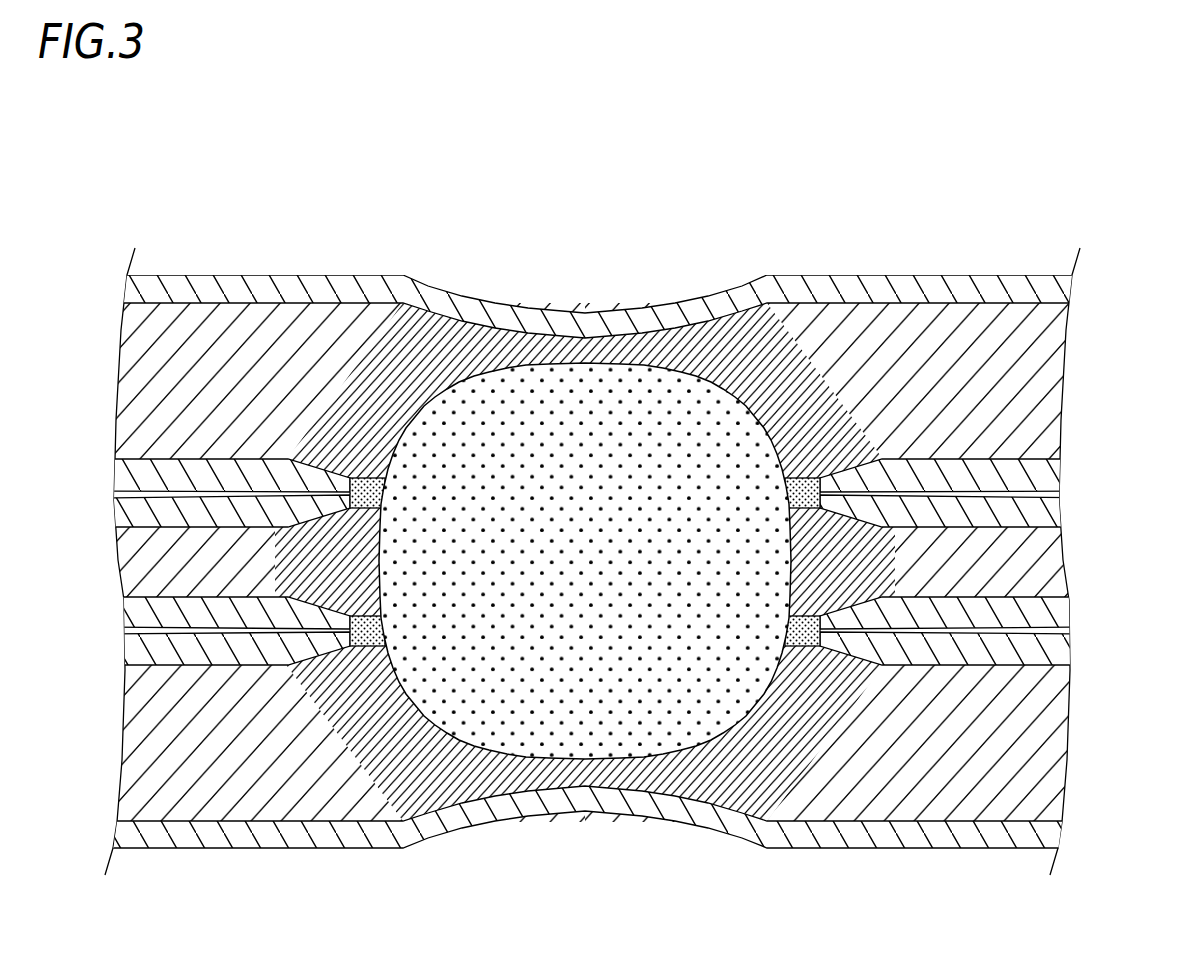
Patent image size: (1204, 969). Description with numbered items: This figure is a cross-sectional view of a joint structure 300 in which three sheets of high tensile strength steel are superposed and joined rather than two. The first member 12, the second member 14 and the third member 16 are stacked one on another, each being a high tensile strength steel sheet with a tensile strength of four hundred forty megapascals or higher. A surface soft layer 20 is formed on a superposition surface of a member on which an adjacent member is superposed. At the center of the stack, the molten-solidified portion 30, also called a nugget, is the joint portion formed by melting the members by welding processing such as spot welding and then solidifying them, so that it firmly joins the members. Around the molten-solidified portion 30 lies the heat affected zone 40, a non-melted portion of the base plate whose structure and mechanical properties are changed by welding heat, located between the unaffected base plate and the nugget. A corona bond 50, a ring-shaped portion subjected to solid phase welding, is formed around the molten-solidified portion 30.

The joint structure 300 is at (346, 219).
The first member 12 is at (1050, 747).
The second member 14 is at (1047, 562).
The third member 16 is at (1040, 380).
The surface soft layer 20 is at (1062, 289).
The molten-solidified portion 30 is at (585, 418).
The heat affected zone 40 is at (692, 350).
The corona bond 50 is at (800, 477).